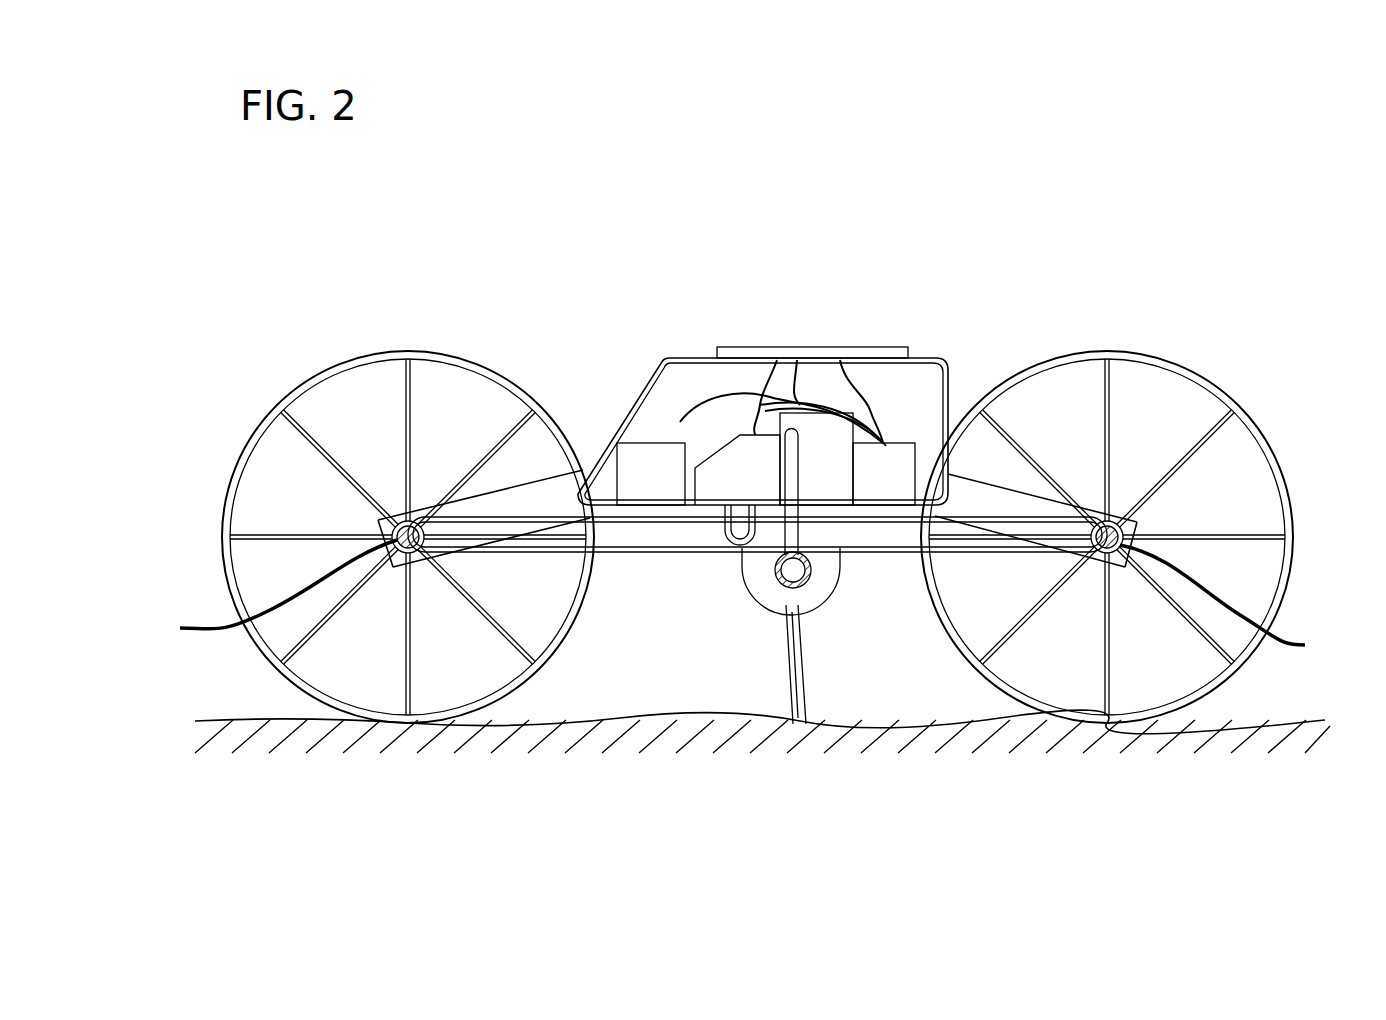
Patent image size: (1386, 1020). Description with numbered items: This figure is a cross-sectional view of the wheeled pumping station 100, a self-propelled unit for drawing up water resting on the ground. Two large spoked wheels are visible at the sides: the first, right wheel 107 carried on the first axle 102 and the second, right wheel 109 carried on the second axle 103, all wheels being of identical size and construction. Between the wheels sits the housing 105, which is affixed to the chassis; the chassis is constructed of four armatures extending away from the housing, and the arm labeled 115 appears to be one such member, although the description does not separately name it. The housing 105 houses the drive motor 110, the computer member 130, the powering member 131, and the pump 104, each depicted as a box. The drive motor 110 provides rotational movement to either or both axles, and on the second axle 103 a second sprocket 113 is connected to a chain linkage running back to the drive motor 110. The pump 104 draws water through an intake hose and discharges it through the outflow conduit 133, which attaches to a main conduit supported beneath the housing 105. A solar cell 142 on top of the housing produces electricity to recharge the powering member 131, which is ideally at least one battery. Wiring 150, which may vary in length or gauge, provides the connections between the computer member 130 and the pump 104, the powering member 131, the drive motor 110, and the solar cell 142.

The wheeled pumping station 100 is at (1123, 118).
The first axle 102 is at (259, 592).
The second axle 103 is at (1239, 603).
The pump 104 is at (830, 490).
The housing 105 is at (948, 360).
The first, right wheel 107 is at (343, 360).
The second, right wheel 109 is at (1195, 372).
The drive motor 110 is at (725, 458).
The second sprocket 113 is at (645, 548).
The support arm 115 is at (978, 545).
The computer member 130 is at (905, 457).
The powering member 131 is at (643, 455).
The outflow conduit 133 is at (780, 580).
The solar cell 142 is at (757, 348).
The wiring 150 is at (863, 400).